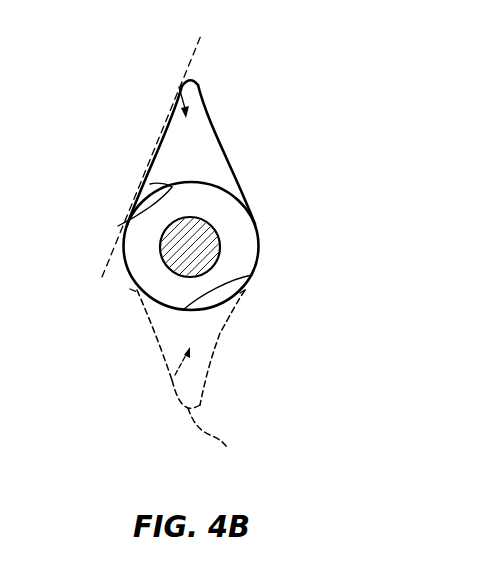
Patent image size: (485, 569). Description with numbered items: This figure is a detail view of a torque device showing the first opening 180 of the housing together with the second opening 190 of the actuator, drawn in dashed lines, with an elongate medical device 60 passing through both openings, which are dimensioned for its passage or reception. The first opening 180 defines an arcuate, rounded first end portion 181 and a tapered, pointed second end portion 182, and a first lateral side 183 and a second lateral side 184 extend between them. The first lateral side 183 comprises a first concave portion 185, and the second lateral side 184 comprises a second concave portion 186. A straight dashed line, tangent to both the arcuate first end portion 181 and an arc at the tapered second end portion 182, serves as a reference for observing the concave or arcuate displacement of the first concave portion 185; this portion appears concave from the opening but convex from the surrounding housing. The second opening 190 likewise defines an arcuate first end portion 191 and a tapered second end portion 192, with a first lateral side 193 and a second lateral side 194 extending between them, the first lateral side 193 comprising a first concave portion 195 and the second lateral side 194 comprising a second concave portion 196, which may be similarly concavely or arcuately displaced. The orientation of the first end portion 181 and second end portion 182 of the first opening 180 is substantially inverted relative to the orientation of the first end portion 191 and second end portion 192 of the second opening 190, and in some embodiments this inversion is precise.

The elongate medical device 60 is at (203, 233).
The first opening 180 is at (180, 82).
The arcuate first end portion 181 is at (252, 275).
The tapered second end portion 182 is at (188, 79).
The first lateral side 183 is at (150, 184).
The second lateral side 184 is at (243, 193).
The first concave portion 185 is at (163, 139).
The second concave portion 186 is at (218, 150).
The second opening 190 is at (172, 377).
The arcuate first end portion 191 is at (118, 226).
The tapered second end portion 192 is at (227, 443).
The first lateral side 193 is at (135, 291).
The second lateral side 194 is at (245, 292).
The first concave portion 195 is at (158, 332).
The second concave portion 196 is at (220, 333).